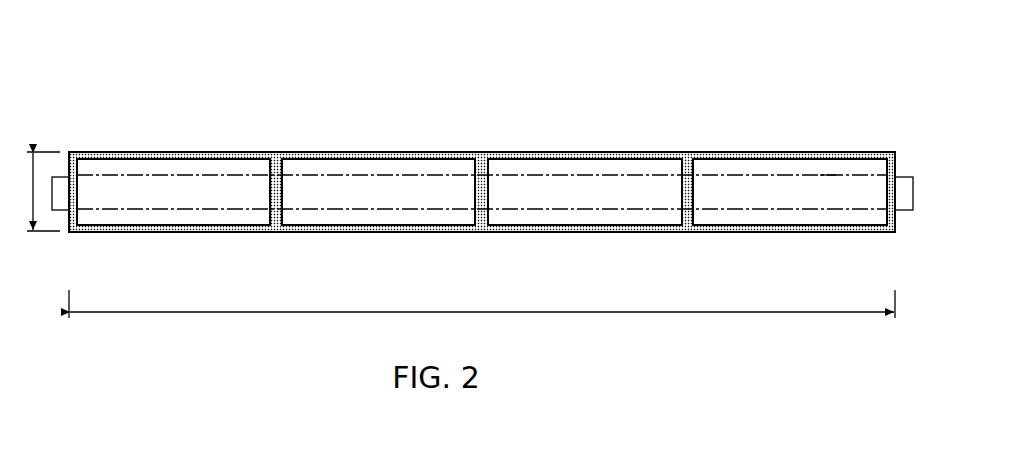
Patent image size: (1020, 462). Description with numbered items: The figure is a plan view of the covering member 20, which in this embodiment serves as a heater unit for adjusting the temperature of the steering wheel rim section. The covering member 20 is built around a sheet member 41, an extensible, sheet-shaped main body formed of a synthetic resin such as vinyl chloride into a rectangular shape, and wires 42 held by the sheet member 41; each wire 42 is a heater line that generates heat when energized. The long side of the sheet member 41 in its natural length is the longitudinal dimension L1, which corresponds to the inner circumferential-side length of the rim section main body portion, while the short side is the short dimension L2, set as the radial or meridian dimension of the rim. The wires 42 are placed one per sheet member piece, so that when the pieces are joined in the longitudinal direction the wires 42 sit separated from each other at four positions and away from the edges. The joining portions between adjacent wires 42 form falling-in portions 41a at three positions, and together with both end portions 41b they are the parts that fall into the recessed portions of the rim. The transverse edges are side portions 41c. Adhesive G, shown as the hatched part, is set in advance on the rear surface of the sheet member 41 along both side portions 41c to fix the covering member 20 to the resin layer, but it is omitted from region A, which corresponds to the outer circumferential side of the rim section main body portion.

The covering member 20 is at (571, 104).
The sheet member 41 is at (683, 233).
The falling-in portion 41a is at (275, 158).
The end portion 41b is at (70, 228).
The side portion 41c is at (128, 156).
The wire 42 is at (178, 160).
The adhesive G is at (80, 158).
The region A is at (827, 174).
The longitudinal dimension L1 is at (482, 314).
The short dimension L2 is at (33, 191).